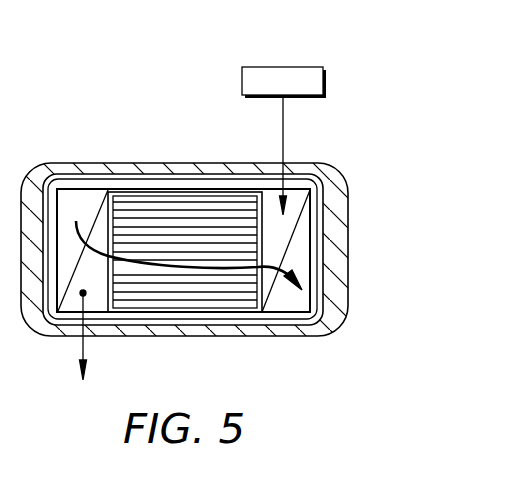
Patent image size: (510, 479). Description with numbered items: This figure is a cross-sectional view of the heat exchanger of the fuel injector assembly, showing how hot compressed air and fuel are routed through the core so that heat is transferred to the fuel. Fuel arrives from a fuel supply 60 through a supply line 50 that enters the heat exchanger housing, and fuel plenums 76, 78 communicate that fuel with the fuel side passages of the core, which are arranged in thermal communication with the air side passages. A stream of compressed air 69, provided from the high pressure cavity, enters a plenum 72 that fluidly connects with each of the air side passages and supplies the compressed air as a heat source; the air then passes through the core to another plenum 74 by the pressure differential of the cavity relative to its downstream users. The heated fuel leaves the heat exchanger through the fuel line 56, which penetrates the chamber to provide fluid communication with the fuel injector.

The supply line 50 is at (283, 113).
The fuel line 56 is at (82, 348).
The fuel supply 60 is at (272, 65).
The stream of compressed air 69 is at (102, 203).
The plenum 72 is at (83, 205).
The plenum 74 is at (295, 260).
The fuel plenum 76 is at (295, 200).
The fuel plenum 78 is at (97, 300).